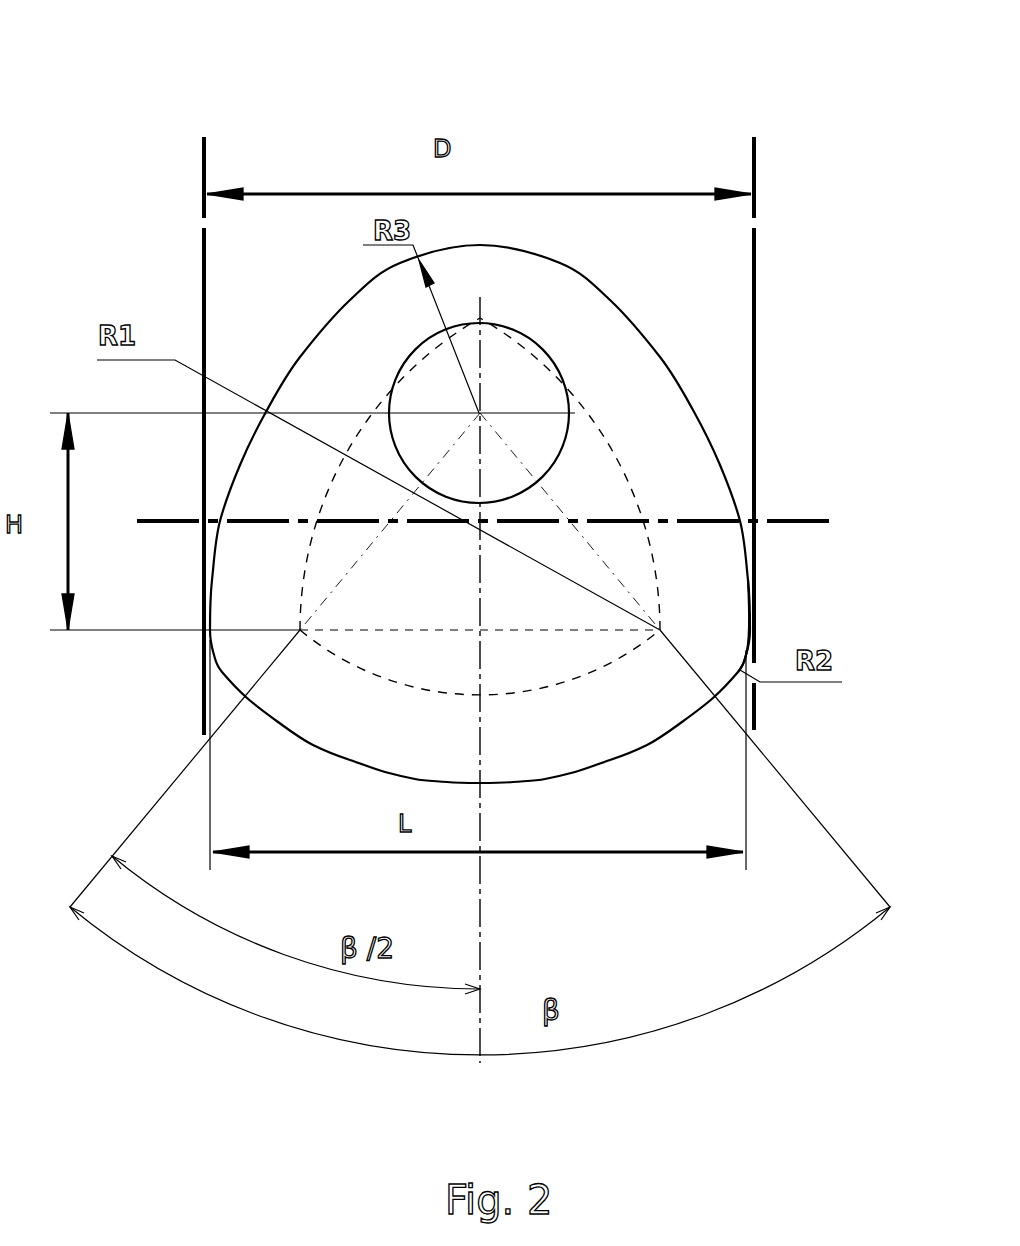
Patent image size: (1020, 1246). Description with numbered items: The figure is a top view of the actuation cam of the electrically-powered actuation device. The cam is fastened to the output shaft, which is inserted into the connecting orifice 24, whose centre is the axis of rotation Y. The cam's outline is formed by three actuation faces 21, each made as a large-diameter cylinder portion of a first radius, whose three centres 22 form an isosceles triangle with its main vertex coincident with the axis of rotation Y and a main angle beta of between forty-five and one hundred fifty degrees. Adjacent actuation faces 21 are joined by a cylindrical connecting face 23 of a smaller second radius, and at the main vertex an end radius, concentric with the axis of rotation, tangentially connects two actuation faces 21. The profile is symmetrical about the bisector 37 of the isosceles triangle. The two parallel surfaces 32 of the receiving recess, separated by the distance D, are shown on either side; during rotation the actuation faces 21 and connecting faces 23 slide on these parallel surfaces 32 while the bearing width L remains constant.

The actuation face 21 is at (300, 357).
The centre of the cylinder portion 22 is at (479, 413).
The cylindrical connecting face 23 is at (753, 635).
The connecting orifice 24 is at (532, 343).
The parallel surface 32 is at (203, 270).
The bisector of the isosceles triangle 37 is at (480, 668).